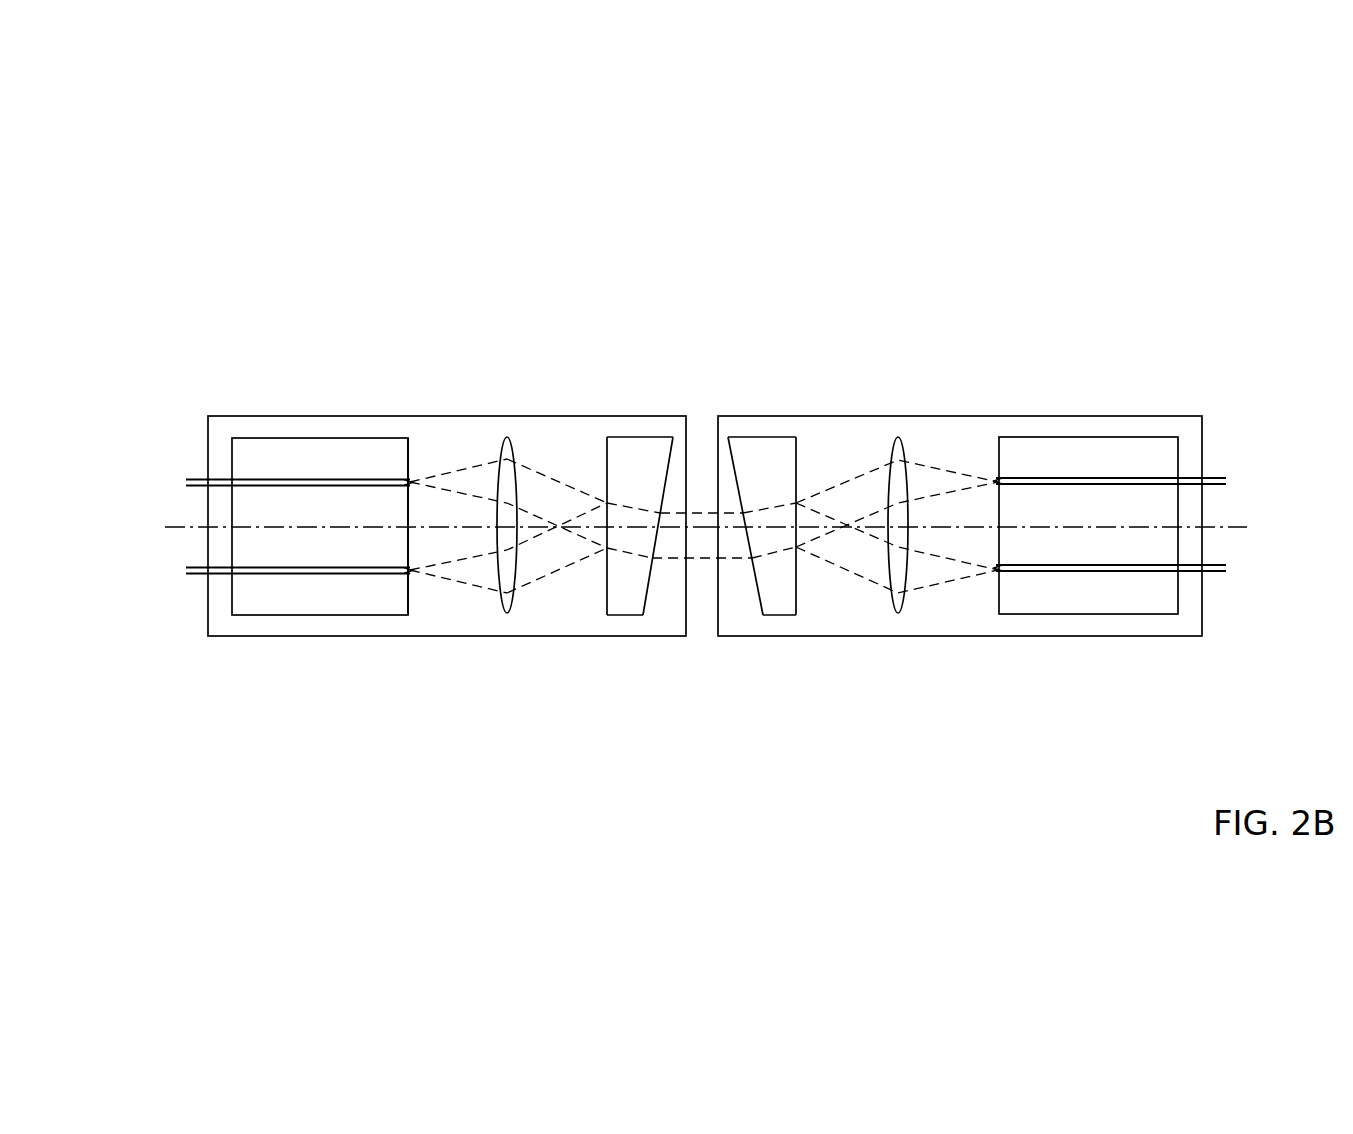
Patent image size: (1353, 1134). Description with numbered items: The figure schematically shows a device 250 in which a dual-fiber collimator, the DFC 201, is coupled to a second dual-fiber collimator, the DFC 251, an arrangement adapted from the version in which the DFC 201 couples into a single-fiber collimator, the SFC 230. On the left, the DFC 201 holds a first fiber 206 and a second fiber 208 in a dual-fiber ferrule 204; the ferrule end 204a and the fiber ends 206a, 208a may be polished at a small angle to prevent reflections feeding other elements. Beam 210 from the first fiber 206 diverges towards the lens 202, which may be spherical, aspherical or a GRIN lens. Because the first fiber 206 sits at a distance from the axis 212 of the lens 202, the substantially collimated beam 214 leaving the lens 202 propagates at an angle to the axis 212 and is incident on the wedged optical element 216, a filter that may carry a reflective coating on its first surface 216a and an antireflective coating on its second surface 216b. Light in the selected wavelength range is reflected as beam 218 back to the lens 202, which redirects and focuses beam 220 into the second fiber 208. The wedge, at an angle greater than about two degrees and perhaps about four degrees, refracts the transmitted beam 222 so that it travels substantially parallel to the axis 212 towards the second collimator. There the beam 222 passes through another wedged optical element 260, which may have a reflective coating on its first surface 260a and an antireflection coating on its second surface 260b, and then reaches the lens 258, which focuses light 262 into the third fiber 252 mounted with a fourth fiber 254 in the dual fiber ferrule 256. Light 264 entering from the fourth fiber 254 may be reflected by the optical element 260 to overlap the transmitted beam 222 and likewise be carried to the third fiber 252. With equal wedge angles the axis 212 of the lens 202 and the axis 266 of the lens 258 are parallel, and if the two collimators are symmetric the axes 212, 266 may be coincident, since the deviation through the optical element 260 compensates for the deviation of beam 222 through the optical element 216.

The DFC 201 is at (250, 416).
The lens 202 is at (508, 437).
The dual-fiber ferrule 204 is at (273, 616).
The ferrule end 204a is at (367, 478).
The first fiber 206 is at (195, 478).
The fiber end 206a is at (411, 414).
The second fiber 208 is at (195, 573).
The fiber end 208a is at (379, 627).
The beam 210 is at (453, 467).
The axis 212 is at (177, 526).
The beam 214 is at (561, 479).
The optical element 216 is at (631, 437).
The first surface 216a is at (606, 608).
The second surface 216b is at (645, 606).
The beam 218 is at (538, 582).
The beam 220 is at (462, 586).
The transmitted beam 222 is at (707, 511).
The SFC 230 is at (1032, 416).
The device 250 is at (1050, 311).
The DFC 251 is at (1078, 637).
The third fiber 252 is at (1215, 477).
The fourth fiber 254 is at (1215, 572).
The dual fiber ferrule 256 is at (1112, 437).
The lens 258 is at (899, 437).
The wedged optical element 260 is at (785, 437).
The first surface 260a is at (797, 606).
The second surface 260b is at (758, 604).
The light 262 is at (953, 479).
The light 264 is at (841, 568).
The axis 266 is at (1203, 523).